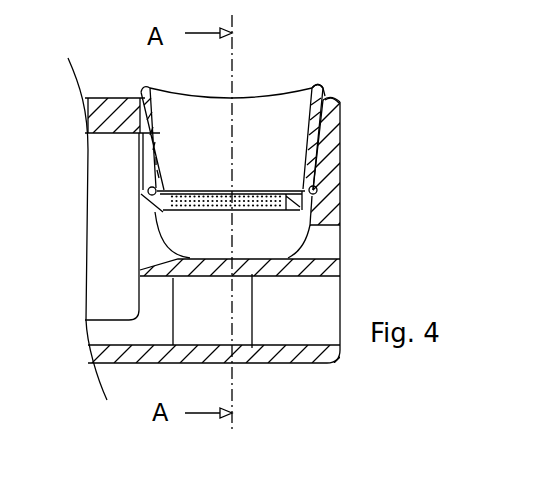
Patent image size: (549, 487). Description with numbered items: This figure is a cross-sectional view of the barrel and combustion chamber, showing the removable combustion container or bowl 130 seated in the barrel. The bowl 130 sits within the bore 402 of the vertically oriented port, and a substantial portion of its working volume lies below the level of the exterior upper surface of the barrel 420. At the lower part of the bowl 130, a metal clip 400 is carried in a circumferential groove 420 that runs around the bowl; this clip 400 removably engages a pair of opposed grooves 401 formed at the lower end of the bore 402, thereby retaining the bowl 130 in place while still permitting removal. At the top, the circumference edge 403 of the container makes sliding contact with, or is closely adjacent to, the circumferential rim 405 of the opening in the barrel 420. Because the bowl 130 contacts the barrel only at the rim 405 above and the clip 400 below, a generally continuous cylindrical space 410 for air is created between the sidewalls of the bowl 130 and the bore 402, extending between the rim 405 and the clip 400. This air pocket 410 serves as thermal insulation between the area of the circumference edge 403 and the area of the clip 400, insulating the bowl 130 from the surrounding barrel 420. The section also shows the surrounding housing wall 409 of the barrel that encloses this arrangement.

The combustion container or bowl 130 is at (262, 117).
The metal clip 400 is at (318, 193).
The opposed grooves 401 is at (148, 193).
The bore 402 is at (320, 158).
The circumference edge 403 is at (318, 95).
The circumferential rim 405 is at (333, 122).
The outer housing wall 409 is at (140, 263).
The cylindrical space 410 is at (90, 134).
The circumferential groove 420 is at (96, 98).